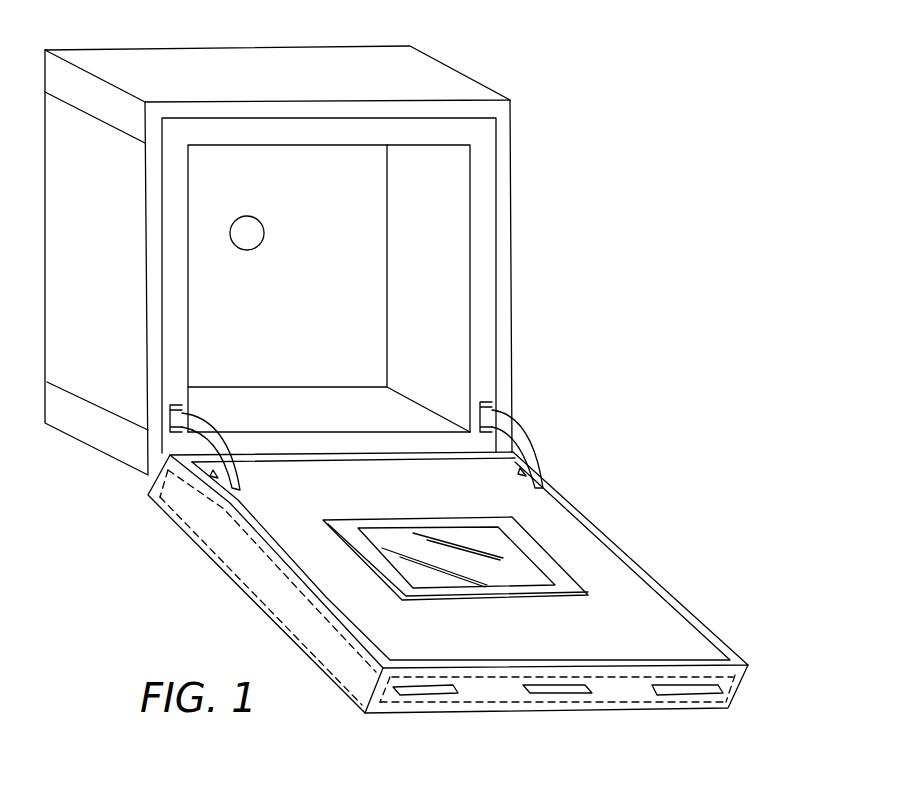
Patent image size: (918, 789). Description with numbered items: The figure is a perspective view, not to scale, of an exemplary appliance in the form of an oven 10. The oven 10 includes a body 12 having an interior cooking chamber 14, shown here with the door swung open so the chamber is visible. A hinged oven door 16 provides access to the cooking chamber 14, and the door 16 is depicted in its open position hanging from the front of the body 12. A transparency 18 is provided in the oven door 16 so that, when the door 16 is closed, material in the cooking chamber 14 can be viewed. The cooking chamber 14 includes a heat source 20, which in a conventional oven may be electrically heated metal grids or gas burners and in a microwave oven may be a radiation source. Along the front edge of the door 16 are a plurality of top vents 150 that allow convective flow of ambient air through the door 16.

The oven 10 is at (574, 119).
The body 12 is at (248, 72).
The cooking chamber 14 is at (310, 165).
The oven door 16 is at (257, 573).
The transparency 18 is at (495, 548).
The heat source 20 is at (252, 243).
The top vents 150 is at (667, 695).